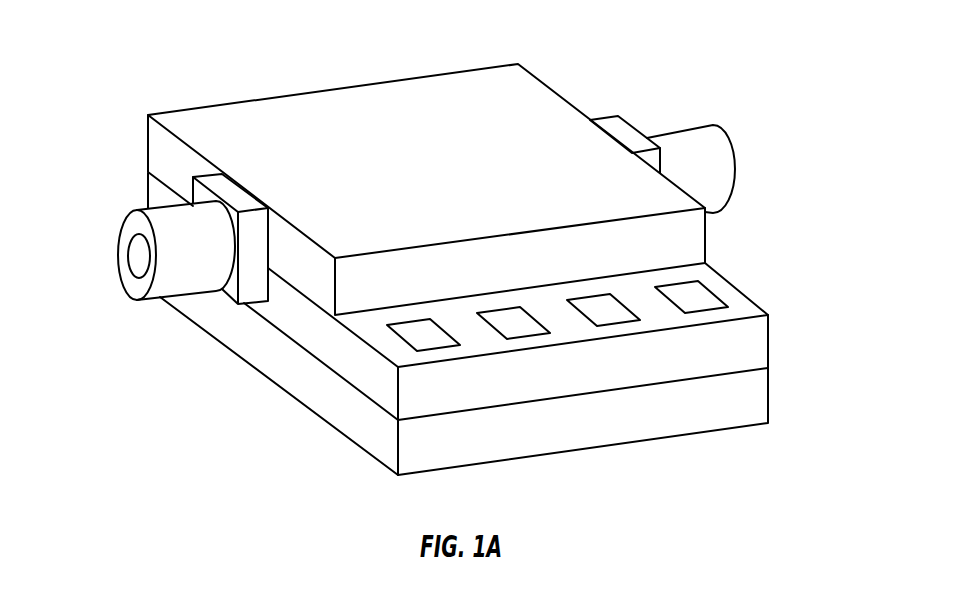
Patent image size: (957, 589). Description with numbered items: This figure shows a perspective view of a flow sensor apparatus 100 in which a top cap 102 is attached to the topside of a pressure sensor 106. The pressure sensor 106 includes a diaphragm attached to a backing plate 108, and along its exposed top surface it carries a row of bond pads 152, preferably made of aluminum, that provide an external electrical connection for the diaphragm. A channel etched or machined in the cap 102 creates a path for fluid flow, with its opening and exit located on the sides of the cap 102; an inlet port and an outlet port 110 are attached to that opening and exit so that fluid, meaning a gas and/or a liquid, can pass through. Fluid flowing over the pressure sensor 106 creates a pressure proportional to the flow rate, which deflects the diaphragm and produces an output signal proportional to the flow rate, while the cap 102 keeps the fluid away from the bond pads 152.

The flow sensor apparatus 100 is at (683, 32).
The cap 102 is at (695, 243).
The pressure sensor 106 is at (518, 366).
The backing plate 108 is at (748, 398).
The inlet port and outlet port 110 is at (140, 257).
The bond pads 152 is at (700, 297).